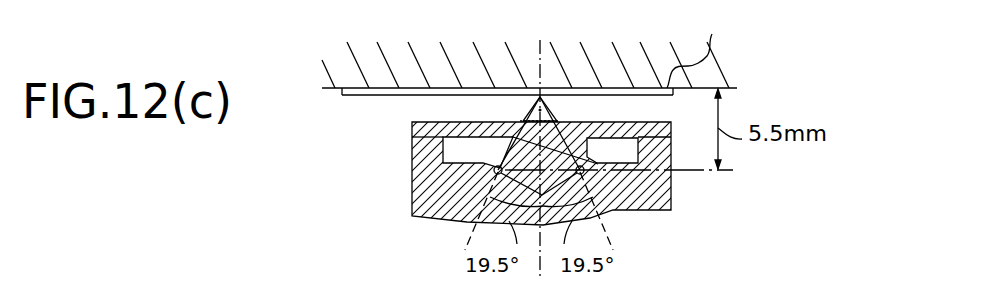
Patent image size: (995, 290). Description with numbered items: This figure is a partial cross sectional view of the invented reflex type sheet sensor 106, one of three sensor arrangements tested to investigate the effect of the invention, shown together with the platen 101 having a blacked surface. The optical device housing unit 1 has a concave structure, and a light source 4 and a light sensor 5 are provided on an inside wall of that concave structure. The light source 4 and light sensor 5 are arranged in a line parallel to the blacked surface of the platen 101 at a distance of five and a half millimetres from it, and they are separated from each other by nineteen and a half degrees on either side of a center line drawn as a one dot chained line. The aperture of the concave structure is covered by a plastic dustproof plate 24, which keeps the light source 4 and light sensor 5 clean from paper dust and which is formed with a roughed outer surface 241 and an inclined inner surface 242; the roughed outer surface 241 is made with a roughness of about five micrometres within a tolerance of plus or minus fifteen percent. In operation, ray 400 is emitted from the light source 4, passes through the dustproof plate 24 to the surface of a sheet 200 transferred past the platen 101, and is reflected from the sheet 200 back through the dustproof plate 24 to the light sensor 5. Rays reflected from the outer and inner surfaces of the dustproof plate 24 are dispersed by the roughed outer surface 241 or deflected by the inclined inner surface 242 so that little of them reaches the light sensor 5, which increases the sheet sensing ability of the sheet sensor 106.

The optical device housing unit 1 is at (412, 175).
The light source 4 is at (495, 175).
The light sensor 5 is at (583, 174).
The dustproof plate 24 is at (458, 122).
The platen 101 is at (717, 72).
The reflex type sheet sensor 106 is at (712, 188).
The sheet 200 is at (535, 48).
The roughed outer surface 241 is at (557, 115).
The inclined inner surface 242 is at (577, 156).
The ray 400 is at (531, 108).